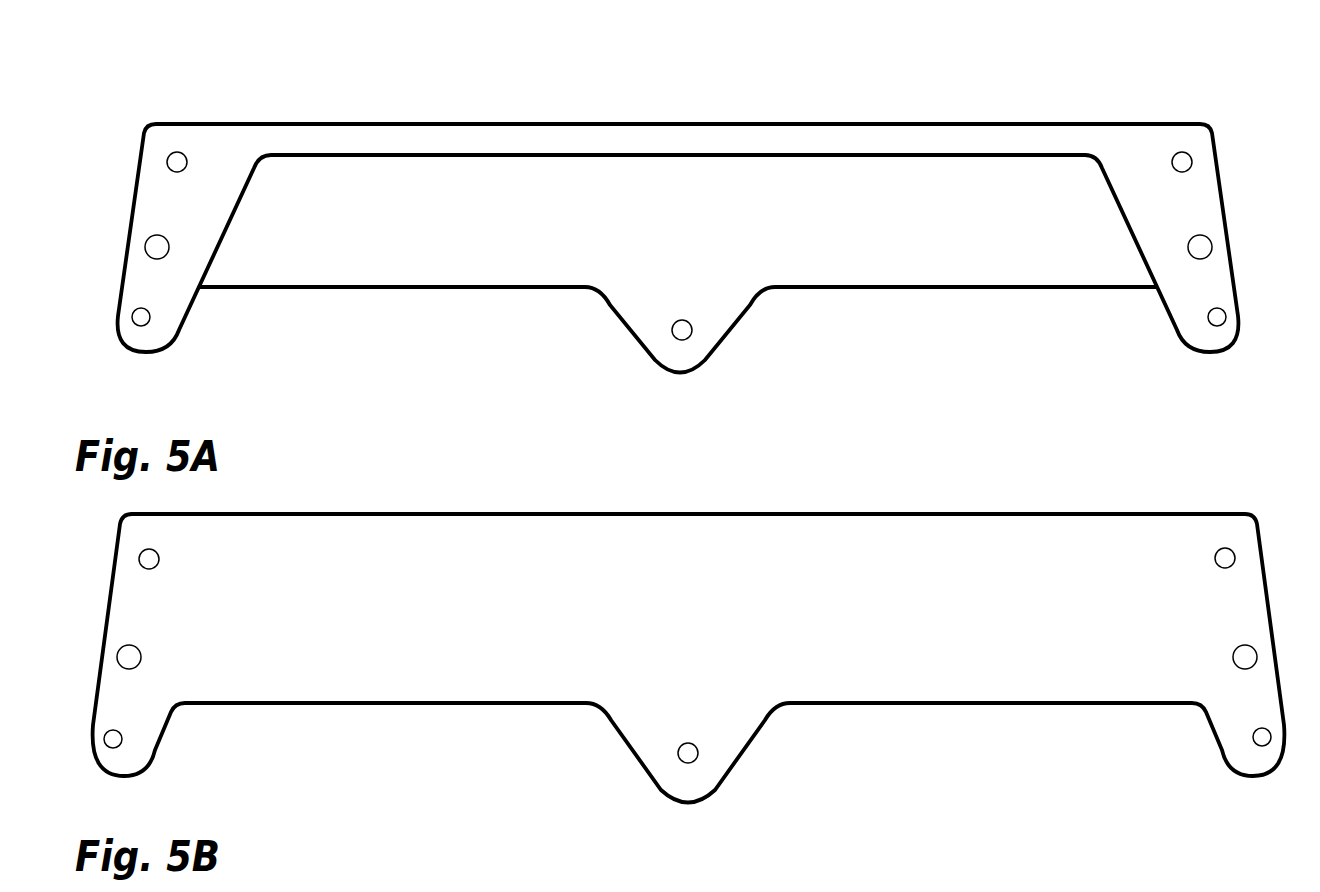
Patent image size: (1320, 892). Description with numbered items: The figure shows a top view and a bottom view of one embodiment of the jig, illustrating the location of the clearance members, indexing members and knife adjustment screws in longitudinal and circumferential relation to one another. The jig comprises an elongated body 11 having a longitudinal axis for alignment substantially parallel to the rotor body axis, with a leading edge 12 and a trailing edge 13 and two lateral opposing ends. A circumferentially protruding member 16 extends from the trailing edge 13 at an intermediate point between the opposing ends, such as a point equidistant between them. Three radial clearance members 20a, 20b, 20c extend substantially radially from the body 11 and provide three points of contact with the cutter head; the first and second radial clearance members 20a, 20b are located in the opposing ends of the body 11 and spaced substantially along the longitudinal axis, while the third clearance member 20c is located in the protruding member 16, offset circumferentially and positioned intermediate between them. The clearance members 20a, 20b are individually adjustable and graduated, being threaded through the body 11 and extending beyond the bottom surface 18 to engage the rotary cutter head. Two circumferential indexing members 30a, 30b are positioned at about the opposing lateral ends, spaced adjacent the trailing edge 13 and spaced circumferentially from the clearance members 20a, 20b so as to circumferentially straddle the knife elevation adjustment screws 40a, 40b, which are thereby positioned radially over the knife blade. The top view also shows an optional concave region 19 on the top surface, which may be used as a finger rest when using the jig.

In FIG. 5A, the elongated body 11 is at (427, 185).
In FIG. 5B, the elongated body 11 is at (481, 560).
In FIG. 5A, the leading edge 12 is at (731, 116).
In FIG. 5A, the trailing edge 13 is at (815, 292).
In FIG. 5B, the trailing edge 13 is at (918, 710).
In FIG. 5A, the circumferentially protruding member 16 is at (647, 303).
In FIG. 5B, the circumferentially protruding member 16 is at (663, 727).
In FIG. 5B, the bottom surface 18 is at (721, 619).
In FIG. 5A, the concave region 19 is at (697, 228).
In FIG. 5A, the first radial clearance member 20a is at (180, 153).
In FIG. 5B, the first radial clearance member 20a is at (157, 559).
In FIG. 5A, the second radial clearance member 20b is at (1182, 152).
In FIG. 5B, the second radial clearance member 20b is at (1222, 556).
In FIG. 5B, the third clearance member 20c is at (690, 752).
In FIG. 5A, the circumferential indexing member 30a is at (141, 317).
In FIG. 5B, the circumferential indexing member 30a is at (113, 739).
In FIG. 5A, the circumferential indexing member 30b is at (1218, 316).
In FIG. 5B, the circumferential indexing member 30b is at (1263, 737).
In FIG. 5A, the knife radial adjustment screw 40a is at (157, 247).
In FIG. 5B, the knife radial adjustment screw 40a is at (129, 657).
In FIG. 5A, the knife radial adjustment screw 40b is at (1200, 247).
In FIG. 5B, the knife radial adjustment screw 40b is at (1240, 660).